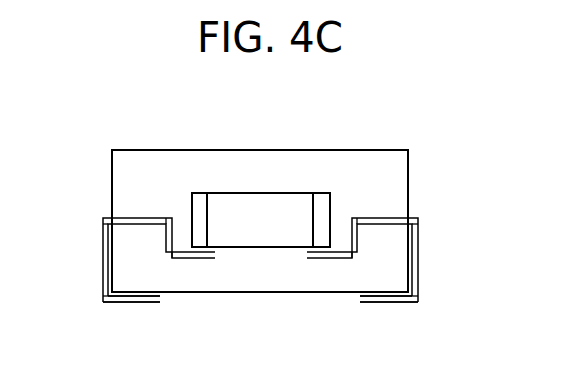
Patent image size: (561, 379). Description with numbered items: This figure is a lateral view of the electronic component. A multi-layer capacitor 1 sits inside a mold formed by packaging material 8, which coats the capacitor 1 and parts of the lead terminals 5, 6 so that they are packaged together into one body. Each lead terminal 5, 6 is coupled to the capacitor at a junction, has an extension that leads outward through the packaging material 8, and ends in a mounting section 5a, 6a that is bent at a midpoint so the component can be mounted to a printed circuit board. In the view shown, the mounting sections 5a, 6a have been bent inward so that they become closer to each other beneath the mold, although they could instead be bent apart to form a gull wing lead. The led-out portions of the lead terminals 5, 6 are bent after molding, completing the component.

The multi-layer capacitor 1 is at (257, 230).
The lead terminal 5 is at (418, 280).
The mounting section 5a is at (390, 307).
The lead terminal 6 is at (103, 260).
The mounting section 6a is at (142, 302).
The packaging material 8 is at (333, 157).